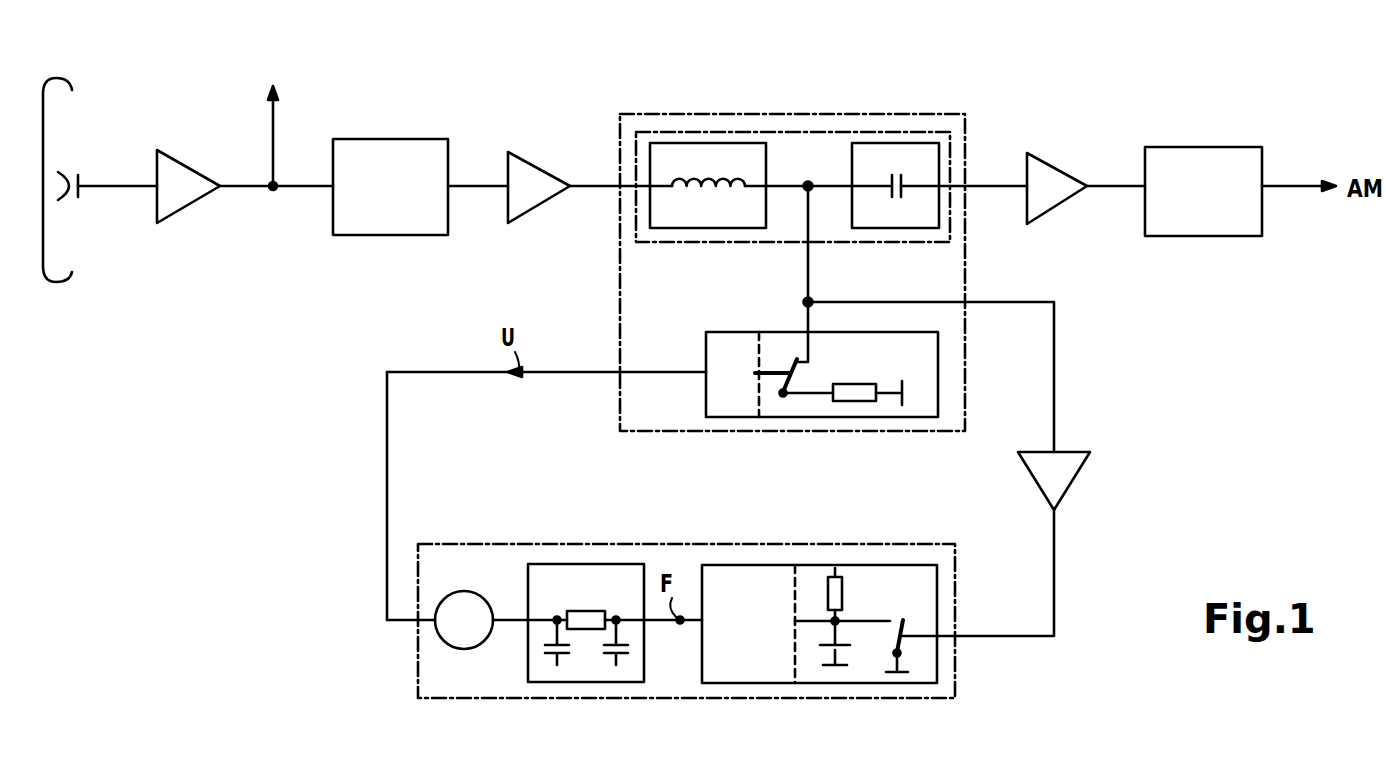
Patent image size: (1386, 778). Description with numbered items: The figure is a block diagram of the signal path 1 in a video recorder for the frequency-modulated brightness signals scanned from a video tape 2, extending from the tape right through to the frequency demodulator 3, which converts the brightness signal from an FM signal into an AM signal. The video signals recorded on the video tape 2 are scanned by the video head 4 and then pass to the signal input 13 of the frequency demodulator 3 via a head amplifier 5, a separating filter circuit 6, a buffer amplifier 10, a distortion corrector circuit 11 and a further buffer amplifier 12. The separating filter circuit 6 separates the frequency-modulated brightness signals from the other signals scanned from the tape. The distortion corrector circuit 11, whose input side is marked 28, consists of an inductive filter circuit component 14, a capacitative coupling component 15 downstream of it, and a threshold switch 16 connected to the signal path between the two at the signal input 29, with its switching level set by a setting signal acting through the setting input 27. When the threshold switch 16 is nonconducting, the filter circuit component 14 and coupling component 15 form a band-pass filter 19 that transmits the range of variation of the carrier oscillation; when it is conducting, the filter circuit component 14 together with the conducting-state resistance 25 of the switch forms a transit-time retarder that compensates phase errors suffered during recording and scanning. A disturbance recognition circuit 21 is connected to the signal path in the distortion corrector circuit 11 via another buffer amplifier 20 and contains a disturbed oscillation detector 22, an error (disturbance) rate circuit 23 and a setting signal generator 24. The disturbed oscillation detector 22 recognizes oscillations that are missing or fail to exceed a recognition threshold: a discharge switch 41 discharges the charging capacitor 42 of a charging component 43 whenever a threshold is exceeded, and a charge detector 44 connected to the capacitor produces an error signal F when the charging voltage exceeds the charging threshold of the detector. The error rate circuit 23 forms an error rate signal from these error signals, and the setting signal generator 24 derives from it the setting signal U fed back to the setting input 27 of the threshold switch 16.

The signal path 1 is at (785, 187).
The video tape 2 is at (43, 117).
The frequency demodulator 3 is at (1172, 156).
The video head 4 is at (70, 200).
The head amplifier 5 is at (178, 167).
The separating filter circuit 6 is at (365, 228).
The buffer amplifier 10 is at (520, 163).
The distortion corrector circuit 11 is at (640, 289).
The further buffer amplifier 12 is at (1037, 168).
The signal input 13 is at (1141, 186).
The inductive filter circuit component 14 is at (704, 150).
The capacitative coupling component 15 is at (893, 150).
The threshold switch 16 is at (928, 378).
The band-pass filter 19 is at (829, 145).
The buffer amplifier 20 is at (1068, 483).
The disturbance recognition circuit 21 is at (470, 556).
The disturbed oscillation detector 22 is at (900, 570).
The error rate circuit 23 is at (576, 570).
The setting signal generator 24 is at (463, 645).
The conducting-state resistance 25 is at (855, 402).
The setting input 27 is at (704, 370).
The input of oscillating circuit 28 is at (614, 190).
The signal input 29 is at (803, 300).
The discharge switch 41 is at (906, 654).
The charging capacitor 42 is at (845, 652).
The charging component 43 is at (828, 578).
The charge detector 44 is at (728, 565).